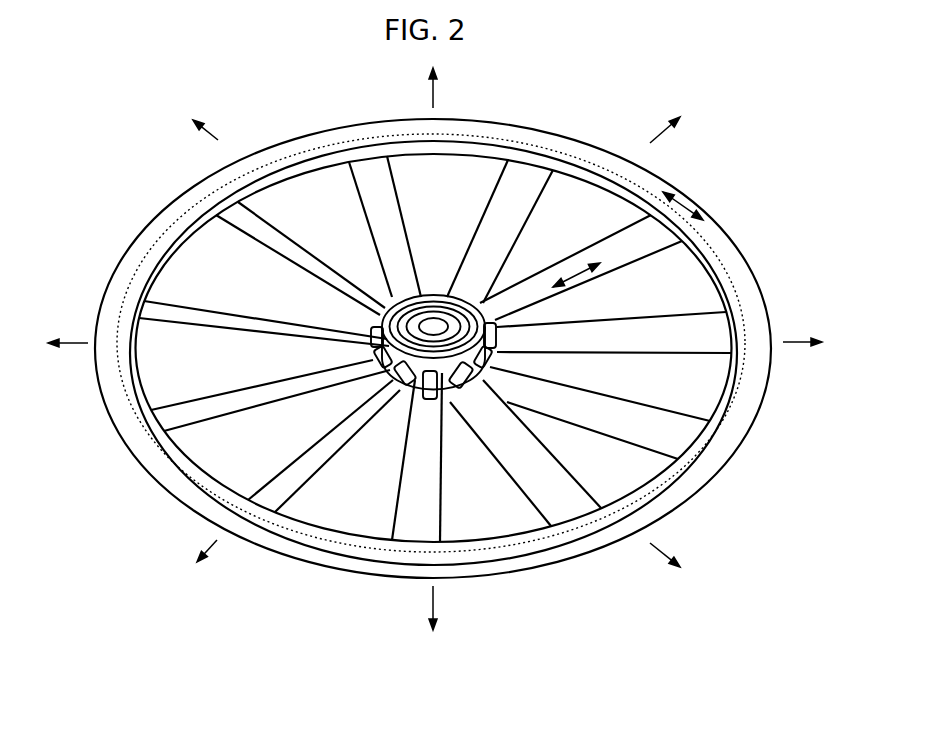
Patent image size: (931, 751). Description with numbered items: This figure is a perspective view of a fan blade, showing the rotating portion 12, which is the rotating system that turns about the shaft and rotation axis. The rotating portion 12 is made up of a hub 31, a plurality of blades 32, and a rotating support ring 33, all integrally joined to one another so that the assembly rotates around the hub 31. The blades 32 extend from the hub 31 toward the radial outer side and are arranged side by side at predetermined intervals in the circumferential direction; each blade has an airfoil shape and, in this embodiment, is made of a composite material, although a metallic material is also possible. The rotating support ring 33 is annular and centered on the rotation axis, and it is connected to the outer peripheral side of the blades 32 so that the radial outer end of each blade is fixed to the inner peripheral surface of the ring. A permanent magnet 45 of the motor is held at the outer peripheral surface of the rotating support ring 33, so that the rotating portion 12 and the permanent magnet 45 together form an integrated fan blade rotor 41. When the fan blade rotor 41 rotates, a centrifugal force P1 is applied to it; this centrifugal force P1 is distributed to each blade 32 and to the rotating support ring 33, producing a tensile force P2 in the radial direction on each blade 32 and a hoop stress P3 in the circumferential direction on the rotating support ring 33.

The rotating portion 12 is at (435, 349).
The hub 31 is at (391, 300).
The blades 32 is at (217, 396).
The rotating support ring 33 is at (433, 323).
The fan blade rotor 41 is at (547, 116).
The permanent magnet 45 is at (646, 520).
The centrifugal force P1 is at (798, 342).
The tensile force P2 is at (577, 273).
The hoop stress P3 is at (684, 205).